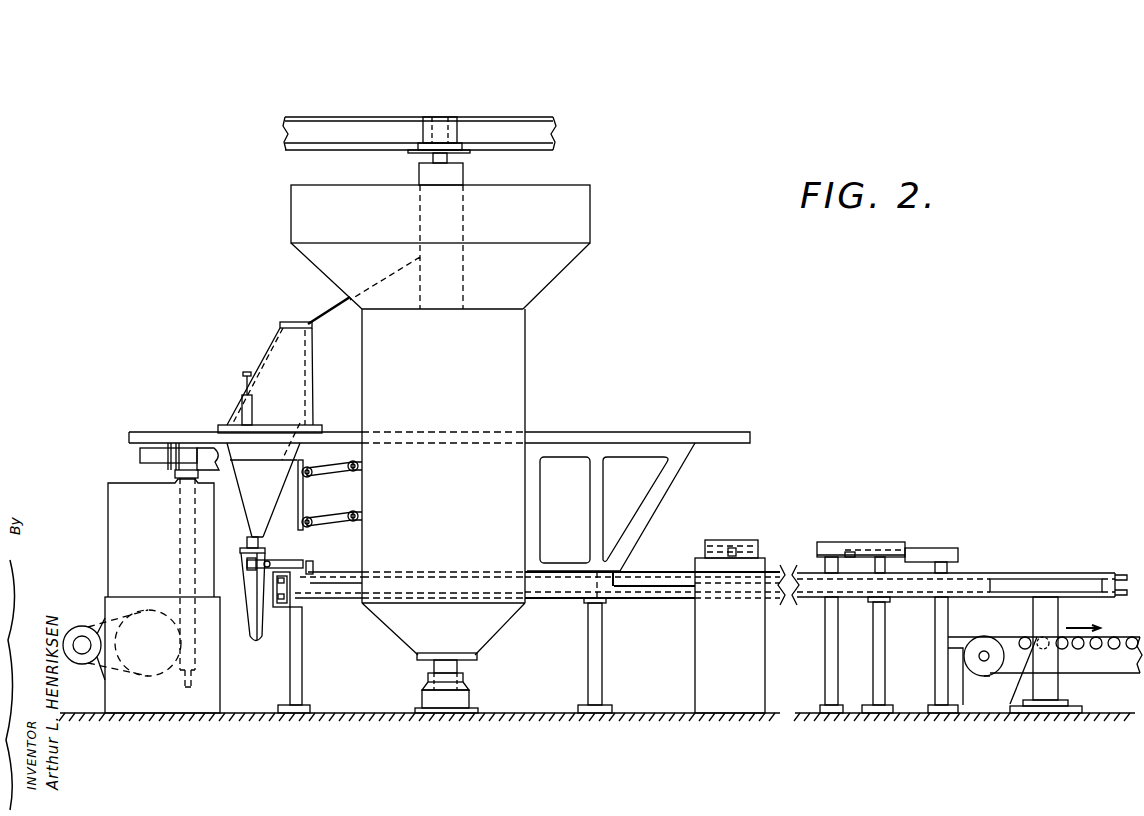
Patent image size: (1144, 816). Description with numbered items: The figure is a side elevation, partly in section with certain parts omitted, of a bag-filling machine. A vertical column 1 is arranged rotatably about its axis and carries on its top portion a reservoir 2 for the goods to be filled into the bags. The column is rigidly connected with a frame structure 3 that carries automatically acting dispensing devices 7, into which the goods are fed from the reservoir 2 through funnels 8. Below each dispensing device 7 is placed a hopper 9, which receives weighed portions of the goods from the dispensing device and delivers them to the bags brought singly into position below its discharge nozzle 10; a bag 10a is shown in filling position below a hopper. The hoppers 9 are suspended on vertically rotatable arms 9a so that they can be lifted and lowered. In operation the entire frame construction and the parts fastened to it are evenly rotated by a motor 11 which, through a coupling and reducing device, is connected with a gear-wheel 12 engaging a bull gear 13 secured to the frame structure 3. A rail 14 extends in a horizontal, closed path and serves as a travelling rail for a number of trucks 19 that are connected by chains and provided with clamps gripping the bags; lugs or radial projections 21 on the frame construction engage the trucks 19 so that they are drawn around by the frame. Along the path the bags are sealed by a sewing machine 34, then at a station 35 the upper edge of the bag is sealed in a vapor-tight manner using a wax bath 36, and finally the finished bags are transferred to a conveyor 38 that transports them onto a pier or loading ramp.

The vertical column 1 is at (527, 324).
The reservoir 2 is at (568, 262).
The frame structure 3 is at (597, 432).
The dispensing device 7 is at (240, 410).
The funnel 8 is at (310, 296).
The hopper 9 is at (290, 488).
The vertically rotatable arm 9a is at (332, 515).
The discharge nozzle 10 is at (260, 544).
The bag 10a is at (257, 643).
The motor 11 is at (84, 655).
The gear-wheel 12 is at (140, 455).
The bull gear 13 is at (192, 462).
The rail 14 is at (635, 600).
The truck 19 is at (285, 603).
The lug 21 is at (314, 564).
The sewing machine 34 is at (720, 540).
The station 35 is at (830, 542).
The wax bath 36 is at (930, 548).
The conveyor 38 is at (1102, 637).